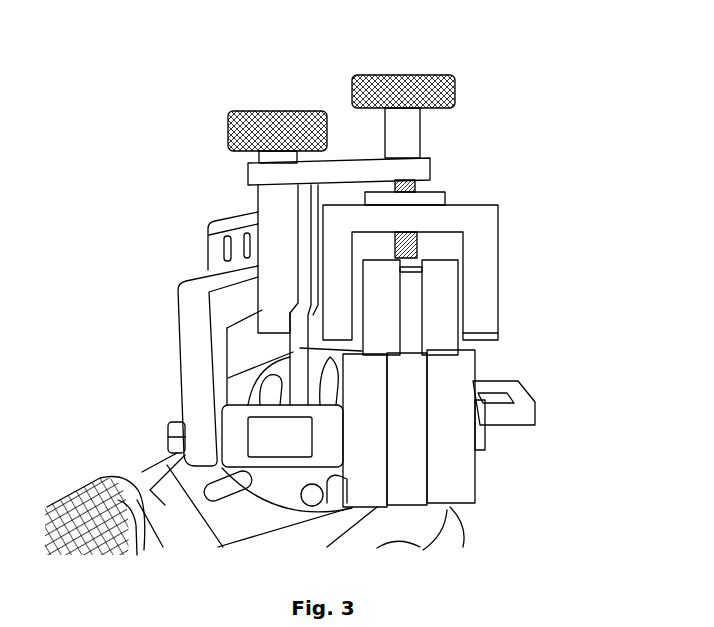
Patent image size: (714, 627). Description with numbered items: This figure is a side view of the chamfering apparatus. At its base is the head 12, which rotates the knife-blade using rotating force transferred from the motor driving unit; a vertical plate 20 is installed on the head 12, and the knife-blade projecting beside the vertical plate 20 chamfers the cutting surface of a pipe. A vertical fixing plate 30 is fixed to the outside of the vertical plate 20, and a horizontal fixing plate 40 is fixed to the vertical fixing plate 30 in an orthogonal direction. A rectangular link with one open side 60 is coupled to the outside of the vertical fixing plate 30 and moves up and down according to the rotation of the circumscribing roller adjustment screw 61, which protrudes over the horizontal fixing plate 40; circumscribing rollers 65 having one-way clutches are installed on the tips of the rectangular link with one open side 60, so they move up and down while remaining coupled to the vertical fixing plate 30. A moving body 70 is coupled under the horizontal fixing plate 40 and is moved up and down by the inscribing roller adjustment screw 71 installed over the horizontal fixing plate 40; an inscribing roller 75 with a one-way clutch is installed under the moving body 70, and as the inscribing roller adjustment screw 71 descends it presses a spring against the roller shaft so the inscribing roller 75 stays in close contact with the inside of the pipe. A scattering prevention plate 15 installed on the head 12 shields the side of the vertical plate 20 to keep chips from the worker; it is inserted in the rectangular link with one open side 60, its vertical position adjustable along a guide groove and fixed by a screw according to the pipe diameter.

The head 12 is at (163, 505).
The scattering prevention plate 15 is at (204, 250).
The vertical plate 20 is at (340, 352).
The vertical fixing plate 30 is at (264, 233).
The horizontal fixing plate 40 is at (347, 160).
The rectangular link with one open side 60 is at (202, 363).
The circumscribing roller adjustment screw 61 is at (263, 113).
The circumscribing rollers 65 is at (453, 438).
The moving body 70 is at (478, 218).
The inscribing roller adjustment screw 71 is at (453, 85).
The inscribing roller 75 is at (438, 308).